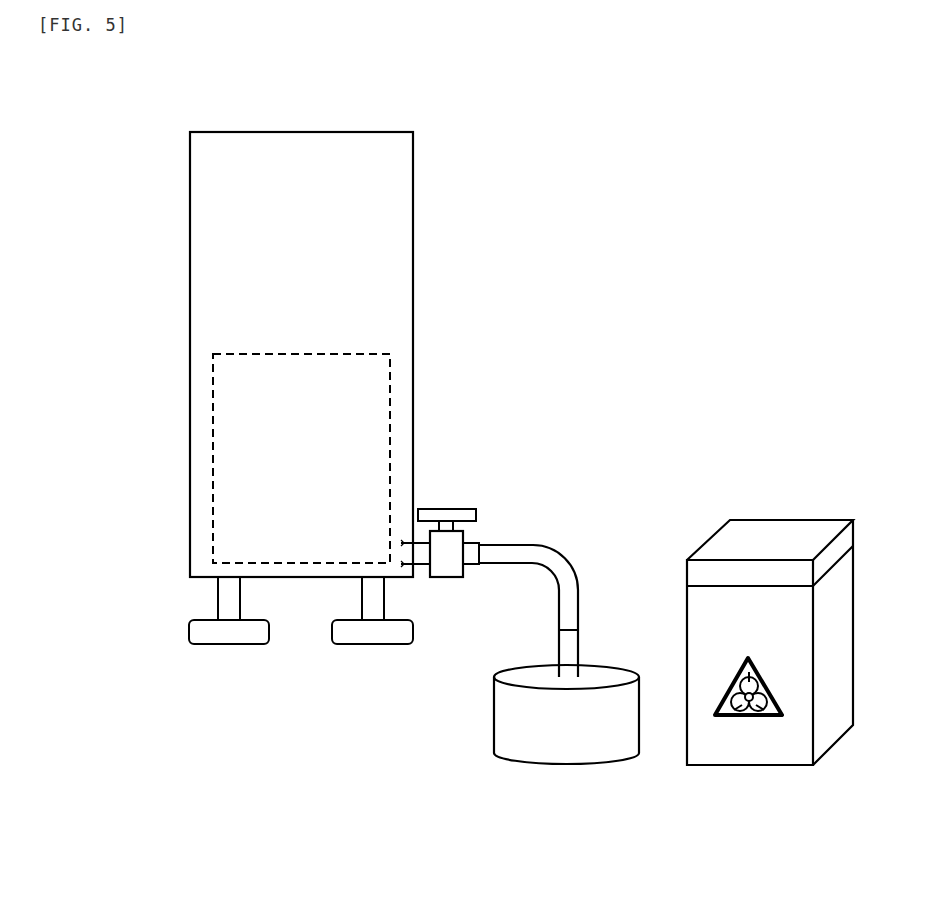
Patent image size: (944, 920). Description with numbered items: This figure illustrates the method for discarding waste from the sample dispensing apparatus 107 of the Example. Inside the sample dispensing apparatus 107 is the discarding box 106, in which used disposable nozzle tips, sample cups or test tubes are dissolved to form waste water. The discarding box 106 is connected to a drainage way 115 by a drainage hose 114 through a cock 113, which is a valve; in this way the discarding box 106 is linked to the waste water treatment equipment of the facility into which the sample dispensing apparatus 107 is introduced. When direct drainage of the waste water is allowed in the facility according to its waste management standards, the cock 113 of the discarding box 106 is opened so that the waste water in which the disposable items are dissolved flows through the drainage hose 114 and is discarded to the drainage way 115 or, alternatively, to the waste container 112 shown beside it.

The discarding box 106 is at (227, 430).
The sample dispensing apparatus 107 is at (296, 131).
The waste container 112 is at (768, 529).
The cock 113 is at (447, 510).
The drainage hose 114 is at (541, 551).
The drainage way 115 is at (599, 675).